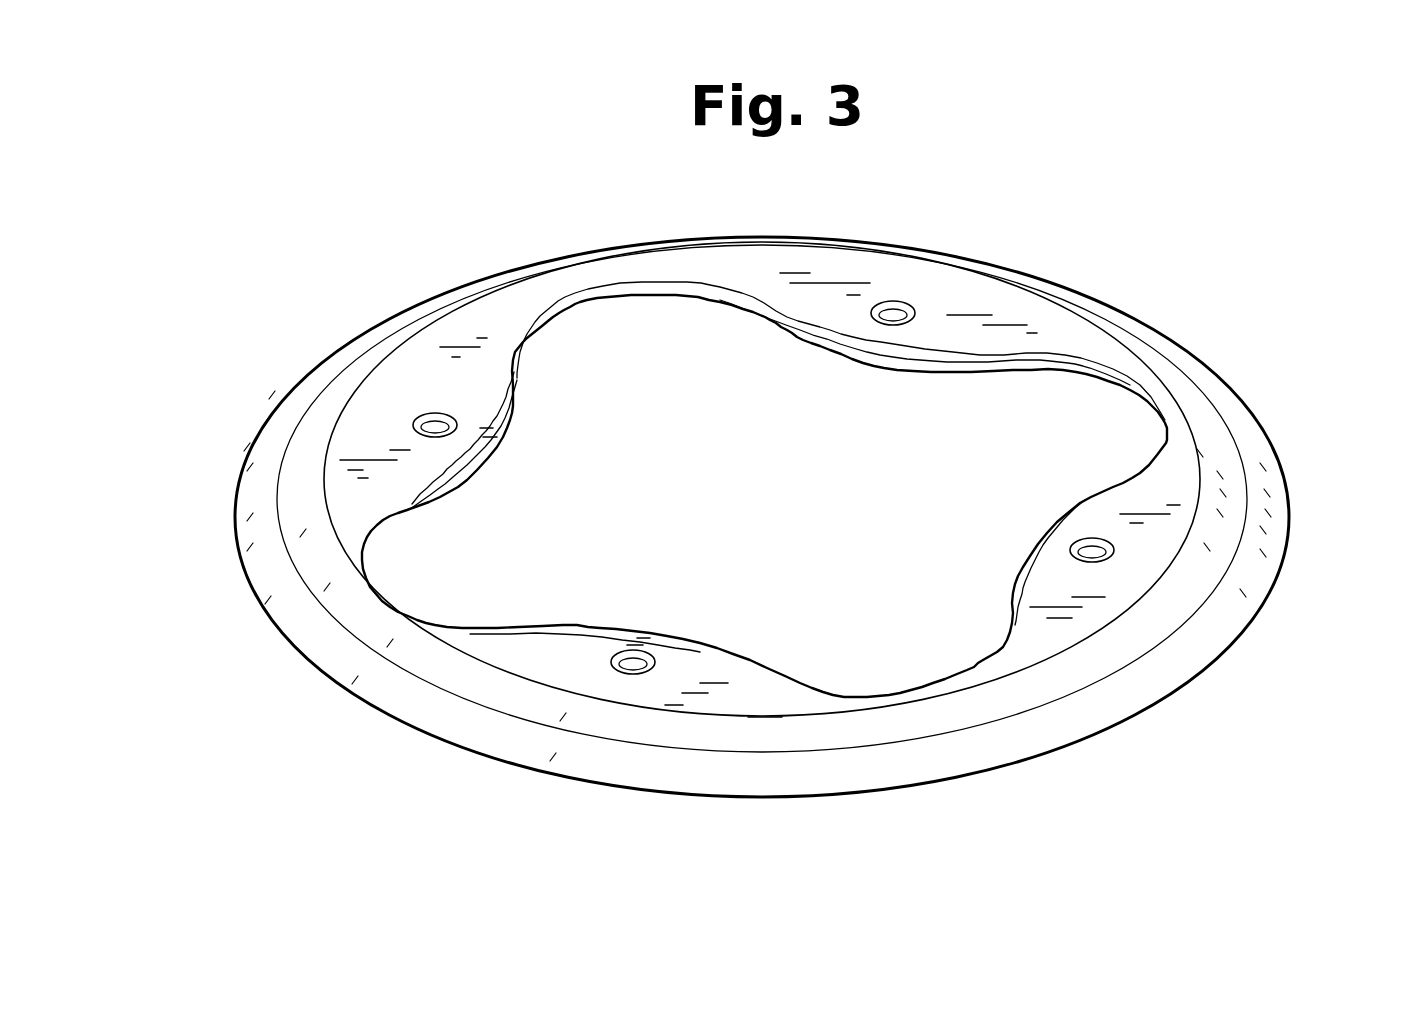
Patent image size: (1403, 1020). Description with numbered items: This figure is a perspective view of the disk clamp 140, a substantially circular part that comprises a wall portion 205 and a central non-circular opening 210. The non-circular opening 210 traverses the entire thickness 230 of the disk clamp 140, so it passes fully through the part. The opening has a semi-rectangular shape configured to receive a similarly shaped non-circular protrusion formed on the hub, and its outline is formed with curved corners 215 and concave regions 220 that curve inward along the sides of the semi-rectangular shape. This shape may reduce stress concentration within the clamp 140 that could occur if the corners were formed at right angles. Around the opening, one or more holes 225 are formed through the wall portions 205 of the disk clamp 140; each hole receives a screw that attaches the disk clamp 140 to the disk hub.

The disk clamp 140 is at (1093, 773).
The wall portion 205 is at (905, 287).
The non-circular opening 210 is at (1083, 408).
The curved corners 215 is at (640, 290).
The concave regions 220 is at (497, 427).
The holes 225 is at (640, 668).
The thickness 230 is at (775, 347).